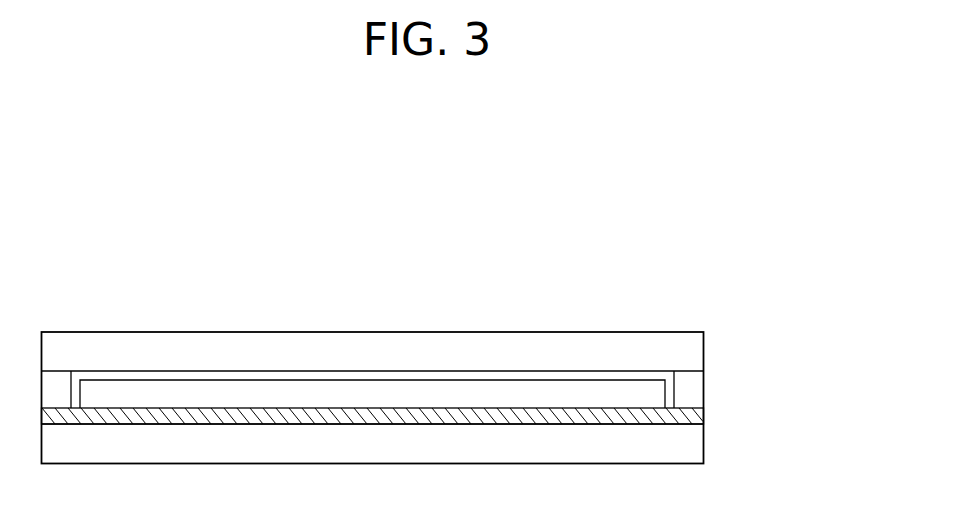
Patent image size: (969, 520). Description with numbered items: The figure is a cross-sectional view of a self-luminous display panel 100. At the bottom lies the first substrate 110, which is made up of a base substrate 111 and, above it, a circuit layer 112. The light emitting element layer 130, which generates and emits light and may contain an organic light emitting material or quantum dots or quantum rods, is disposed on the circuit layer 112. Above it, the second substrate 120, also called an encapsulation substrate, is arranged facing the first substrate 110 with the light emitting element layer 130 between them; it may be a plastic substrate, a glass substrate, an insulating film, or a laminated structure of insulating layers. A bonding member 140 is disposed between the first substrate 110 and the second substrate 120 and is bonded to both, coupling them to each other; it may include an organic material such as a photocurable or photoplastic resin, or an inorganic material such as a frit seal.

The display panel 100 is at (738, 268).
The first substrate 110 is at (794, 403).
The base substrate 111 is at (690, 447).
The circuit layer 112 is at (690, 417).
The second substrate 120 is at (690, 349).
The light emitting element layer 130 is at (573, 395).
The bonding member 140 is at (690, 389).